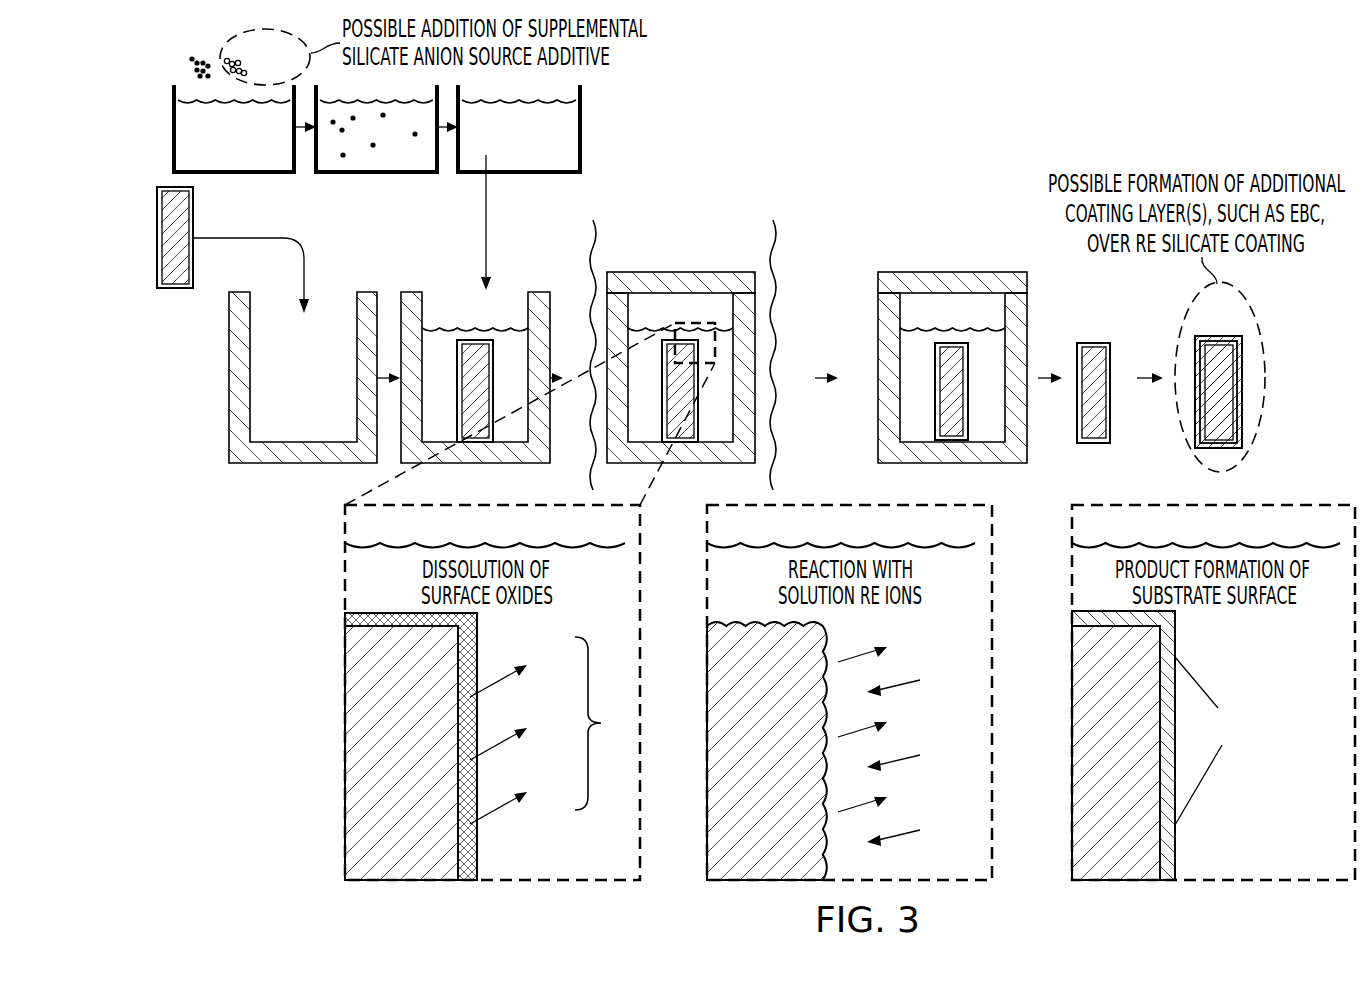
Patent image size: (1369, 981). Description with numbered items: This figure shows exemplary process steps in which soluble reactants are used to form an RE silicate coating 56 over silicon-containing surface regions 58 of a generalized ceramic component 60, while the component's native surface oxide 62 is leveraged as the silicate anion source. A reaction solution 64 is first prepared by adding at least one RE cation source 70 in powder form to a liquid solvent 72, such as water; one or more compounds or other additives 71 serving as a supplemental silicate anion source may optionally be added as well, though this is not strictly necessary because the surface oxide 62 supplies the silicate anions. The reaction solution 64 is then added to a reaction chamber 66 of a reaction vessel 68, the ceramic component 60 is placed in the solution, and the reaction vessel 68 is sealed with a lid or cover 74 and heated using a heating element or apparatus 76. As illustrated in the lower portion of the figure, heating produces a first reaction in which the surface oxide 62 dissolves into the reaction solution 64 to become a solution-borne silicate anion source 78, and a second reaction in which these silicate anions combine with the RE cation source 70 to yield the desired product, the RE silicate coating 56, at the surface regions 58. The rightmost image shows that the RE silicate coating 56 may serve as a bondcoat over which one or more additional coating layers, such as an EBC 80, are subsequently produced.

The RE silicate coating 56 is at (968, 365).
The silicon-containing surface regions 58 is at (968, 405).
The ceramic component 60 is at (175, 223).
The native surface oxide 62 is at (193, 222).
The reaction solution 64 is at (570, 165).
The reaction chamber 66 is at (350, 324).
The reaction vessel 68 is at (315, 455).
The RE cation source 70 is at (190, 58).
The additives 71 is at (246, 70).
The liquid solvent 72 is at (284, 165).
The lid or cover 74 is at (672, 281).
The heating element or apparatus 76 is at (598, 226).
The solution-borne silicate anion source 78 is at (722, 738).
The EBC 80 is at (1212, 458).